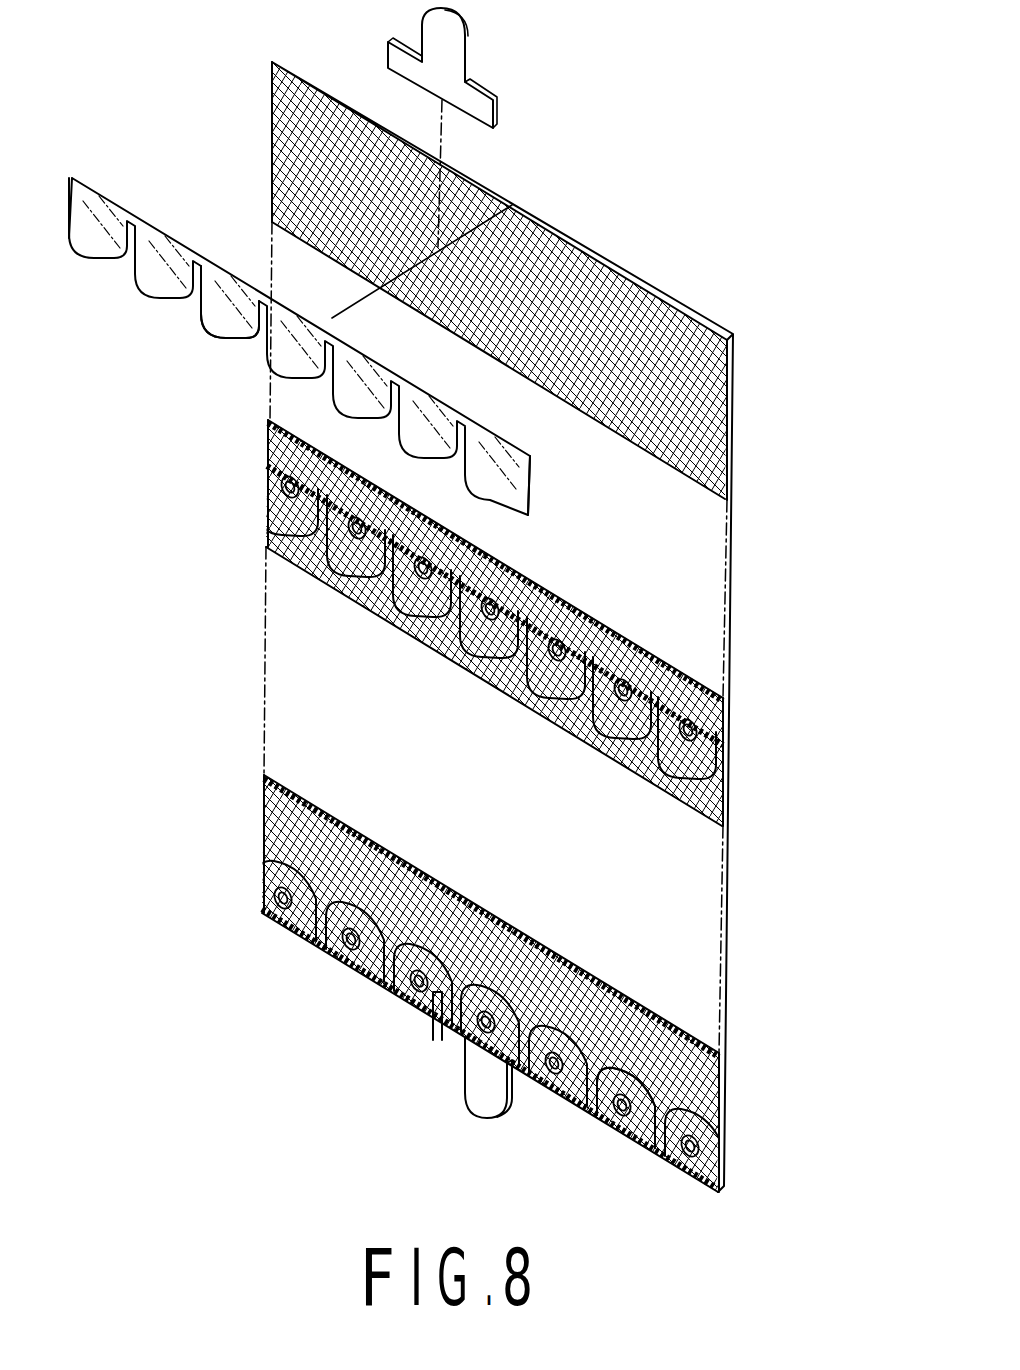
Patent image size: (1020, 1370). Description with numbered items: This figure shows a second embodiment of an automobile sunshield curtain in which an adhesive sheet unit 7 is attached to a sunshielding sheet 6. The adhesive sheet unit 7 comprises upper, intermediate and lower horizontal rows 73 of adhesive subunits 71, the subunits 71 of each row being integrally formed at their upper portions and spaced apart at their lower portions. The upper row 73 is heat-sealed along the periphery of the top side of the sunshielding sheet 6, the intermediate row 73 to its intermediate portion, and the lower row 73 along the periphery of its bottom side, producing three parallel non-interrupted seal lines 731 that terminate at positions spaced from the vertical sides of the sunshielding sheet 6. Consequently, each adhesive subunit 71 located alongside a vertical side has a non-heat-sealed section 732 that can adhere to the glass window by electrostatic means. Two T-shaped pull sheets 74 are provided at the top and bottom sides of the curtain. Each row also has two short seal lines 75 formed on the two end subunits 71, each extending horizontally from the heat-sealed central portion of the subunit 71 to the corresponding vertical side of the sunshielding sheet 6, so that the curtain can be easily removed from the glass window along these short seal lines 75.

The sunshielding sheet 6 is at (740, 721).
The adhesive sheet unit 7 is at (83, 257).
The adhesive subunit 71 is at (222, 313).
The horizontal row 73 is at (162, 240).
The non-interrupted seal line 731 is at (666, 662).
The non-heat-sealed section 732 is at (268, 468).
The T-shaped pull sheet 74 is at (432, 23).
The short seal line 75 is at (268, 500).